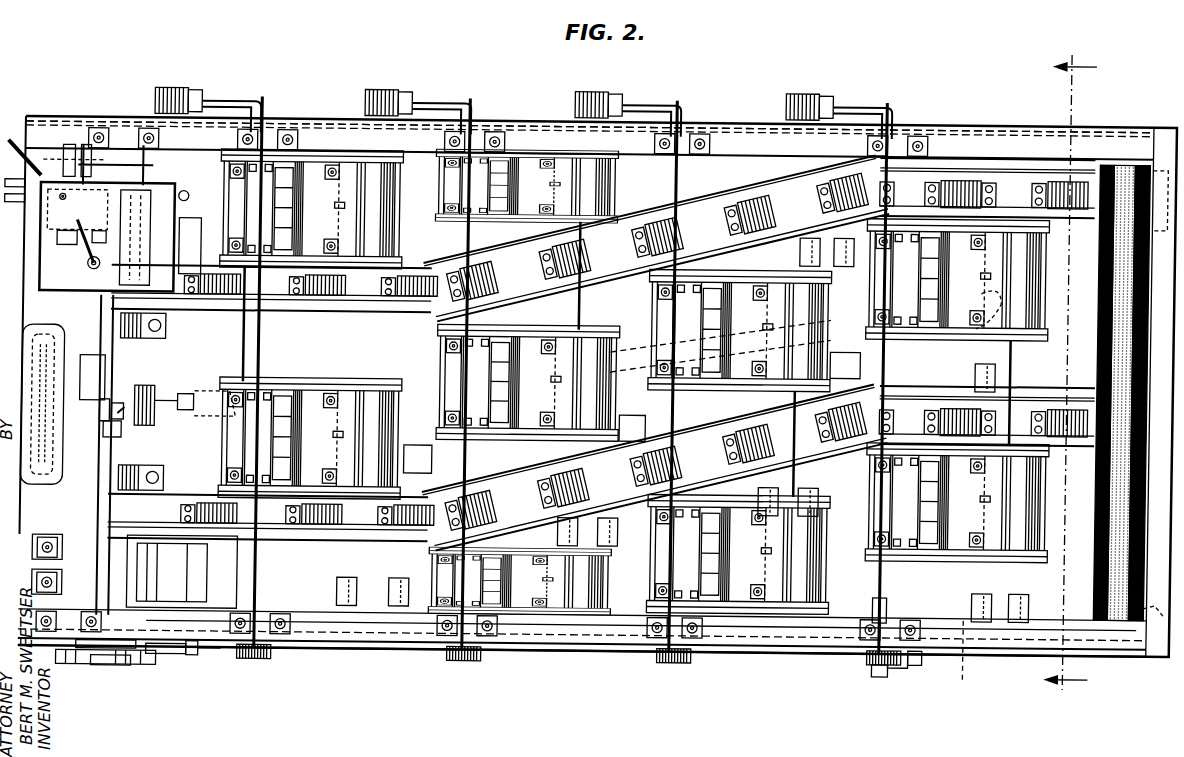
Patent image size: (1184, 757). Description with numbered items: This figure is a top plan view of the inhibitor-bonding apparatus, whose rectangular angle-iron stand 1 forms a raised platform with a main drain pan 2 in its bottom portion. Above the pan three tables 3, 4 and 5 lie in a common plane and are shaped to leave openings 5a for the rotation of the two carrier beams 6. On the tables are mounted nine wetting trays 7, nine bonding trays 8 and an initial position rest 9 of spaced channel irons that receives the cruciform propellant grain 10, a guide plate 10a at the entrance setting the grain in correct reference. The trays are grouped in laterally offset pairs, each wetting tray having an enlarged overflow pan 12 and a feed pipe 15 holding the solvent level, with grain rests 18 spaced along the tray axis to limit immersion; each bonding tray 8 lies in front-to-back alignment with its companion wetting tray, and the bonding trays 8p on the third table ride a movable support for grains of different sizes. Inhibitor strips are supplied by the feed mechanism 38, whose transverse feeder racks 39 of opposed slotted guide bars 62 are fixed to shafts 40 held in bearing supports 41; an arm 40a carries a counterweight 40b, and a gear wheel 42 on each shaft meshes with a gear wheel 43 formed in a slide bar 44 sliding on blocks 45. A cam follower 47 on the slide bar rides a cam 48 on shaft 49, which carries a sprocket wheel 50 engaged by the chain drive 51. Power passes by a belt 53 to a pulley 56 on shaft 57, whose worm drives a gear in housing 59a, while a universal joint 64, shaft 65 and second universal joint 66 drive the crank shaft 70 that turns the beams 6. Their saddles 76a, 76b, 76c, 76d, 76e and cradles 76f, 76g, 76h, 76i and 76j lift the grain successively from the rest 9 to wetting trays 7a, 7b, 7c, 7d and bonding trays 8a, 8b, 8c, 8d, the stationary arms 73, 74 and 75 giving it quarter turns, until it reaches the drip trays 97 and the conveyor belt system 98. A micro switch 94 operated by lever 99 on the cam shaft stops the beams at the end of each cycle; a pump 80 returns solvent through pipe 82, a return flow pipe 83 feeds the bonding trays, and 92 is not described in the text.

The stand 1 is at (1170, 655).
The main drain pan 2 is at (956, 660).
The table 3 is at (950, 620).
The table 4 is at (752, 215).
The table 5 is at (705, 125).
The openings 5a is at (640, 226).
The carrier beams 6 is at (958, 165).
The wetting trays 7 is at (378, 189).
The first set of wetting trays 7a is at (1000, 237).
The wetting trays 7b is at (790, 523).
The third set of wetting trays 7c is at (586, 572).
The wetting trays 7d is at (370, 415).
The bonding trays 8 is at (300, 211).
The bonding trays 8p is at (508, 218).
The first set of bonding trays 8a is at (915, 545).
The second bonding trays 8b is at (700, 524).
The bonding trays 8c is at (488, 573).
The bonding trays 8d is at (284, 417).
The initial position rest 9 is at (1148, 250).
The propellant grain 10 is at (1140, 470).
The guide plate 10a is at (1158, 606).
The overflow pan 12 is at (398, 203).
The feed pipe 15 is at (352, 440).
The grain rests 18 is at (822, 248).
The inhibitor strip feed mechanism 38 is at (278, 658).
The feeder racks 39 is at (967, 455).
The shaft 40 is at (893, 600).
The arm 40a is at (860, 108).
The counterweight 40b is at (826, 98).
The bearing supports 41 is at (915, 133).
The gear wheel 42 is at (886, 674).
The gear wheel 43 is at (922, 662).
The slide bar 44 is at (822, 658).
The blocks 45 is at (903, 666).
The cam follower 47 is at (162, 652).
The cam 48 is at (90, 656).
The shaft 49 is at (112, 672).
The sprocket wheel 50 is at (140, 672).
The chain drive 51 is at (62, 675).
The belt 53 is at (44, 354).
The pulley 56 is at (34, 395).
The shaft 57 is at (150, 424).
The gear wheel housing 59a is at (126, 424).
The slotted guide bars 62 is at (866, 478).
The universal joint 64 is at (194, 400).
The shaft 65 is at (622, 350).
The second universal joint 66 is at (979, 300).
The shaft 70 is at (1142, 350).
The stationary arm 73 is at (838, 358).
The stationary arm 74 is at (626, 418).
The stationary arm 75 is at (425, 452).
The right extreme saddles 76a is at (1076, 436).
The saddles 76b is at (980, 416).
The third set of saddles 76c is at (845, 445).
The saddles 76d is at (752, 440).
The saddles 76e is at (652, 496).
The cradles 76f is at (532, 496).
The cradles 76g is at (422, 526).
The cradles 76h is at (335, 530).
The cradles 76i is at (232, 528).
The cradles 76j is at (140, 520).
The pump 80 is at (82, 258).
The pipe 82 is at (12, 140).
The return flow pipe 83 is at (62, 158).
The rod 92 is at (150, 170).
The micro switch 94 is at (100, 372).
The trays 97 is at (185, 232).
The conveyor belt system 98 is at (12, 210).
The lever 99 is at (120, 434).